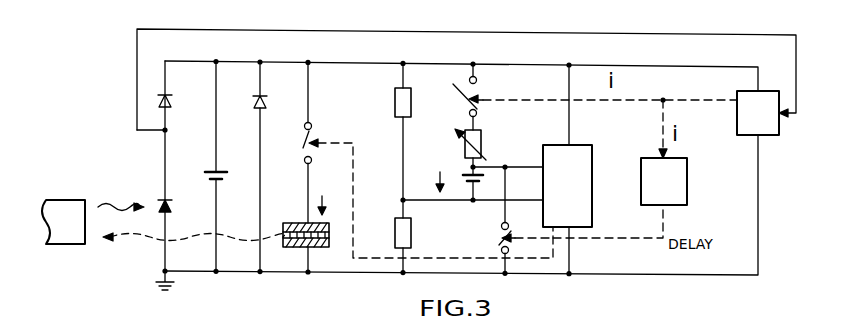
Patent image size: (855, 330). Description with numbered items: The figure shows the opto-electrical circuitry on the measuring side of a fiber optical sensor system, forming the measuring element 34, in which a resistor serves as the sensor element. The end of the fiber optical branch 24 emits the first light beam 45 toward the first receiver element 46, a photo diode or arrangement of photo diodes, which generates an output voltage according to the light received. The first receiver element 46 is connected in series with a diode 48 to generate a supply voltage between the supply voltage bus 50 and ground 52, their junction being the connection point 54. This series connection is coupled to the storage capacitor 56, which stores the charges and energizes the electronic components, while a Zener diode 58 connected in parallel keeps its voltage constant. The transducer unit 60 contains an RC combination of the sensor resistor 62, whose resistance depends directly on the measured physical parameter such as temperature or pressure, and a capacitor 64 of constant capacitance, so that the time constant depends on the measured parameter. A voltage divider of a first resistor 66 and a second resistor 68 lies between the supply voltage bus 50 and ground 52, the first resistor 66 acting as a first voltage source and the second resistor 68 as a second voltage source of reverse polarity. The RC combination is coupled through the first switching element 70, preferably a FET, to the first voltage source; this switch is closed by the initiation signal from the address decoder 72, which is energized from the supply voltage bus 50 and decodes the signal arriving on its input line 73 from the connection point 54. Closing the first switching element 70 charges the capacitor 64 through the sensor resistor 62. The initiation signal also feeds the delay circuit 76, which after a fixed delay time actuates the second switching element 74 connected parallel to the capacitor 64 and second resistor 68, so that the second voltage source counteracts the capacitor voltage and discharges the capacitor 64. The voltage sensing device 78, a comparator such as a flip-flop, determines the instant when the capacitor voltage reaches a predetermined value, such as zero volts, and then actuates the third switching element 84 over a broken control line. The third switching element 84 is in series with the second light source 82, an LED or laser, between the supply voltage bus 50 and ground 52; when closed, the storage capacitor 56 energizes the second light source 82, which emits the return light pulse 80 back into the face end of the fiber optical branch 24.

The fiber optical branch 24 is at (84, 201).
The measuring element 34 is at (114, 79).
The first light beam 45 is at (123, 207).
The first receiver element 46 is at (172, 212).
The diode 48 is at (170, 100).
The supply voltage bus 50 is at (188, 61).
The ground 52 is at (162, 279).
The connection point 54 is at (163, 133).
The storage capacitor 56 is at (222, 178).
The Zener diode 58 is at (258, 99).
The transducer unit 60 is at (440, 146).
The sensor resistor 62 is at (463, 152).
The capacitor 64 is at (478, 181).
The first resistor 66 is at (394, 95).
The second resistor 68 is at (395, 239).
The first switching element 70 is at (457, 97).
The address decoder 72 is at (765, 128).
The input line 73 is at (757, 38).
The second switching element 74 is at (501, 239).
The delay circuit 76 is at (675, 200).
The voltage sensing device 78 is at (593, 215).
The return light pulse 80 is at (128, 238).
The second light source 82 is at (322, 247).
The third switching element 84 is at (305, 144).